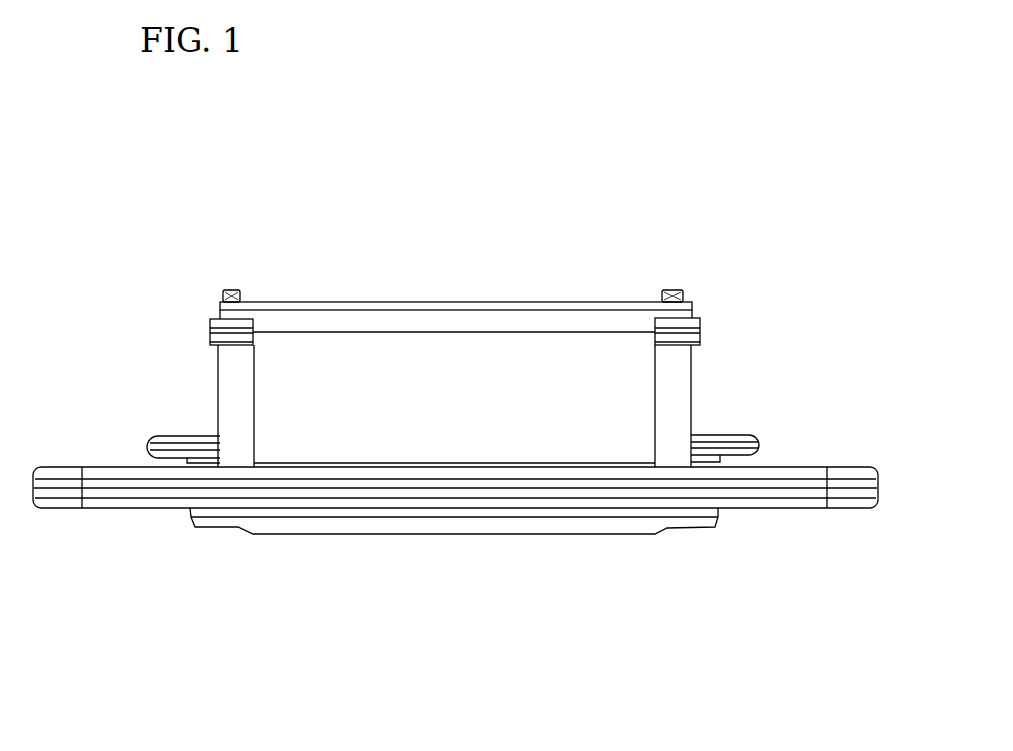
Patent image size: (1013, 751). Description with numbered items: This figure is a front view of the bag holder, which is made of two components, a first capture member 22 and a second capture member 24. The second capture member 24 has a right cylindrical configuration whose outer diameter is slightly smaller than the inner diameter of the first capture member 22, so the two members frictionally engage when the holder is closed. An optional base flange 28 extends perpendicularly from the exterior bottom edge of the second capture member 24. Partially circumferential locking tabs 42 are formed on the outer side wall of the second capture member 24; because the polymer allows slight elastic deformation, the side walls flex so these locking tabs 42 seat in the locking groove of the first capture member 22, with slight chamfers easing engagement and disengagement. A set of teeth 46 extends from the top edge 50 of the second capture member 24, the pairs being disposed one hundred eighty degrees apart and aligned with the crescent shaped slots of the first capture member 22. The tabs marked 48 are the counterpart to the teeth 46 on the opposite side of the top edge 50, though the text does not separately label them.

The first capture member 22 is at (650, 523).
The second capture member 24 is at (625, 375).
The base flange 28 is at (97, 492).
The locking tabs 42 is at (218, 318).
The teeth 46 is at (237, 293).
The right cap 48 is at (697, 312).
The top edge 50 is at (422, 301).